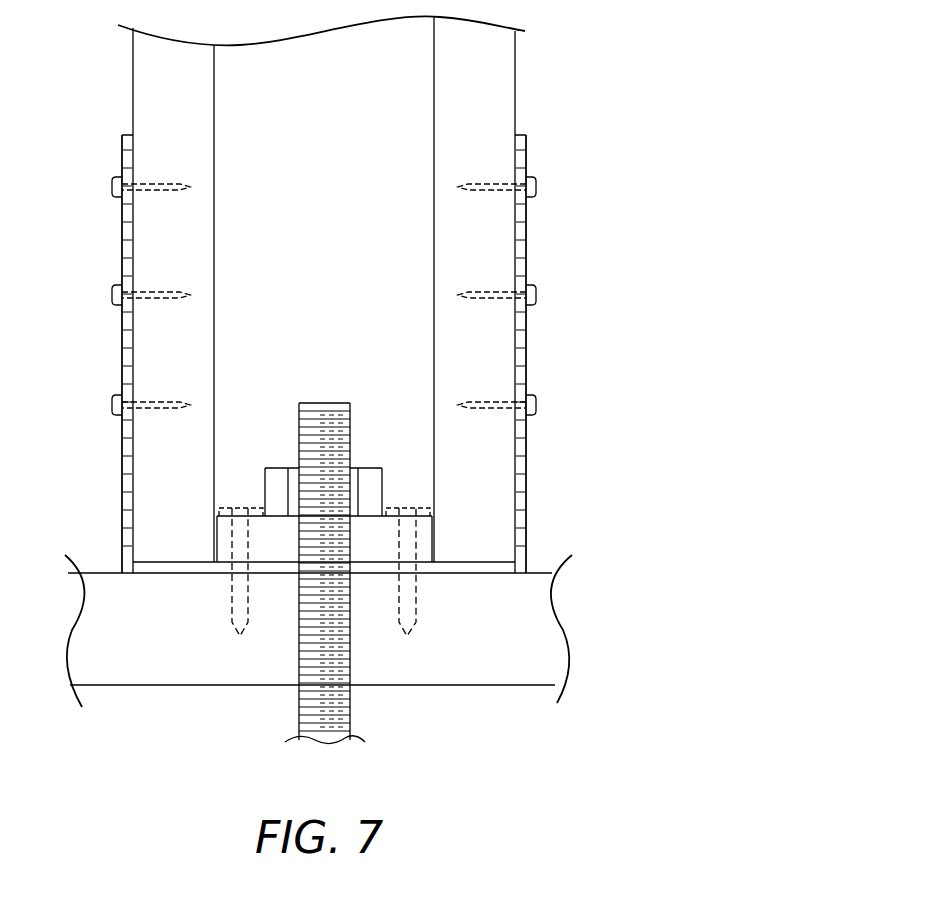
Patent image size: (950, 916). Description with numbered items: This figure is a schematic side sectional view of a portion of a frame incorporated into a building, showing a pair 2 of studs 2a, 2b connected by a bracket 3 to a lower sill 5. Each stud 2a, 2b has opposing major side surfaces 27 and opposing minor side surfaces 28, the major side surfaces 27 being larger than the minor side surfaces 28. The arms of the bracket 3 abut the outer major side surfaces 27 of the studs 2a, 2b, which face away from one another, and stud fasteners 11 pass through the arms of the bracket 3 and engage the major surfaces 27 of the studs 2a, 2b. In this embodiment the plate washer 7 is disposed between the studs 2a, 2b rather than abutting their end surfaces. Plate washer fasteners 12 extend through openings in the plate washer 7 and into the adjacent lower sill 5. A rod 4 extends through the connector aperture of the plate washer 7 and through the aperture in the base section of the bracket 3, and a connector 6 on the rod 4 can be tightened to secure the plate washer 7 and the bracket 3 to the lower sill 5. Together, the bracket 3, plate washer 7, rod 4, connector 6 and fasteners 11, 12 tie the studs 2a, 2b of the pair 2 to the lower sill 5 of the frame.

The pair of studs 2 is at (318, 294).
The stud 2a is at (133, 55).
The stud 2b is at (515, 60).
The bracket 3 is at (527, 362).
The rod 4 is at (350, 712).
The lower sill 5 is at (437, 662).
The connector 6 is at (370, 468).
The plate washer 7 is at (385, 530).
The stud fasteners 11 is at (538, 292).
The plate washer fasteners 12 is at (232, 595).
The major side surfaces 27 is at (531, 110).
The minor side surfaces 28 is at (162, 91).